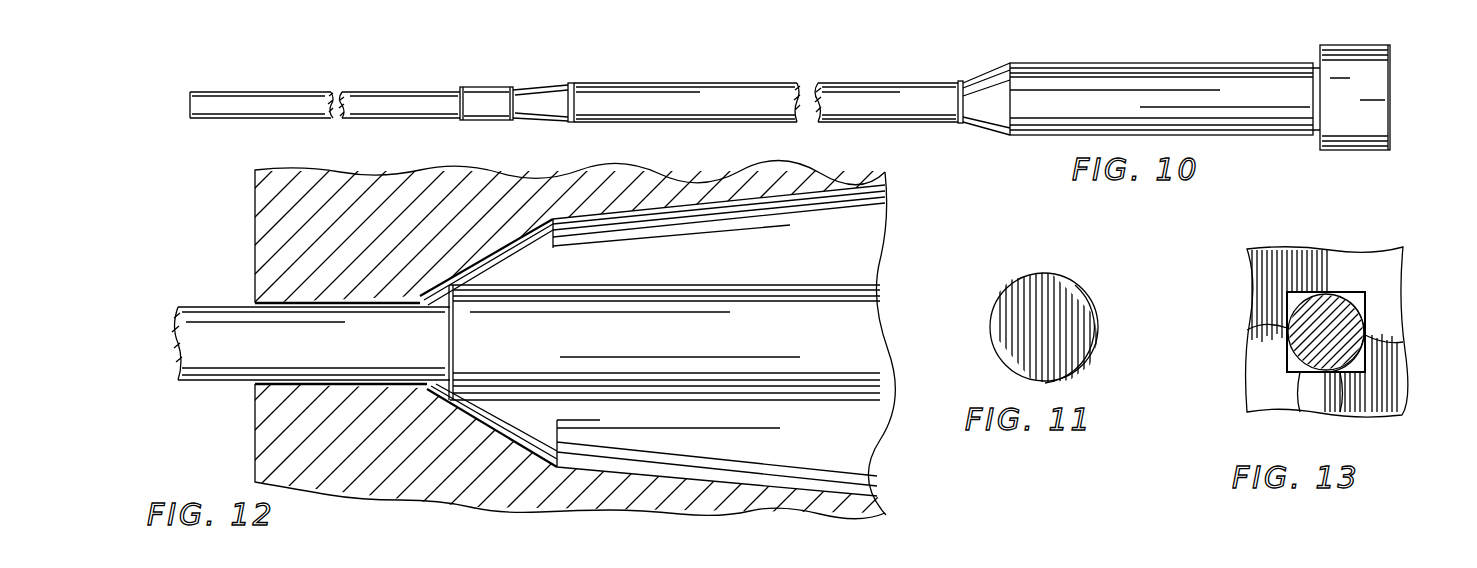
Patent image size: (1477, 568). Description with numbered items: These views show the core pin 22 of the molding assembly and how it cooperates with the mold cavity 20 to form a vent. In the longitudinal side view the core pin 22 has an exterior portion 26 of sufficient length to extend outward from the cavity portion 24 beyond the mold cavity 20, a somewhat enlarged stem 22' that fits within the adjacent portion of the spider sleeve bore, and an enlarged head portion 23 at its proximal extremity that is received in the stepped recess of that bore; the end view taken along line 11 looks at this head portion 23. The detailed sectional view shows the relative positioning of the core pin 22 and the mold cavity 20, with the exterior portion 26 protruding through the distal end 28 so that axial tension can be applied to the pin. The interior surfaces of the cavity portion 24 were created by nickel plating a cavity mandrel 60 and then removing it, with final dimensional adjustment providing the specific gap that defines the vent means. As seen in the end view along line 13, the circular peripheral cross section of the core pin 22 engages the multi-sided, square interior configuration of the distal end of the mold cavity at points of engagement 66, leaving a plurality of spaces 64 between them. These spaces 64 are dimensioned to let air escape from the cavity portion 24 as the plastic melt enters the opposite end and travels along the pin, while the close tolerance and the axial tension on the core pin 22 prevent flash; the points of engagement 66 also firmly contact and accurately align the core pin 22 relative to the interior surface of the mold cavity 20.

In FIG. 12, the mold cavity 20 is at (418, 185).
In FIG. 10, the core pin 22 is at (735, 93).
In FIG. 12, the core pin 22 is at (664, 326).
In FIG. 13, the core pin 22 is at (1328, 332).
In FIG. 10, the enlarged stem 22' is at (1165, 88).
In FIG. 12, the enlarged stem 22' is at (488, 343).
In FIG. 10, the enlarged head portion 23 is at (1394, 105).
In FIG. 11, the enlarged head portion 23 is at (1078, 297).
In FIG. 12, the cavity portion 24 is at (656, 210).
In FIG. 10, the exterior portion 26 is at (420, 84).
In FIG. 12, the exterior portion 26 is at (232, 384).
In FIG. 12, the distal end 28 is at (241, 298).
In FIG. 13, the cavity mandrel 60 is at (1340, 382).
In FIG. 13, the spaces 64 is at (1318, 293).
In FIG. 12, the points of engagement 66 is at (253, 300).
In FIG. 13, the points of engagement 66 is at (1328, 292).
In FIG. 10, the line 11— 11 is at (1424, 32).
In FIG. 12, the line 13— 13 is at (190, 268).